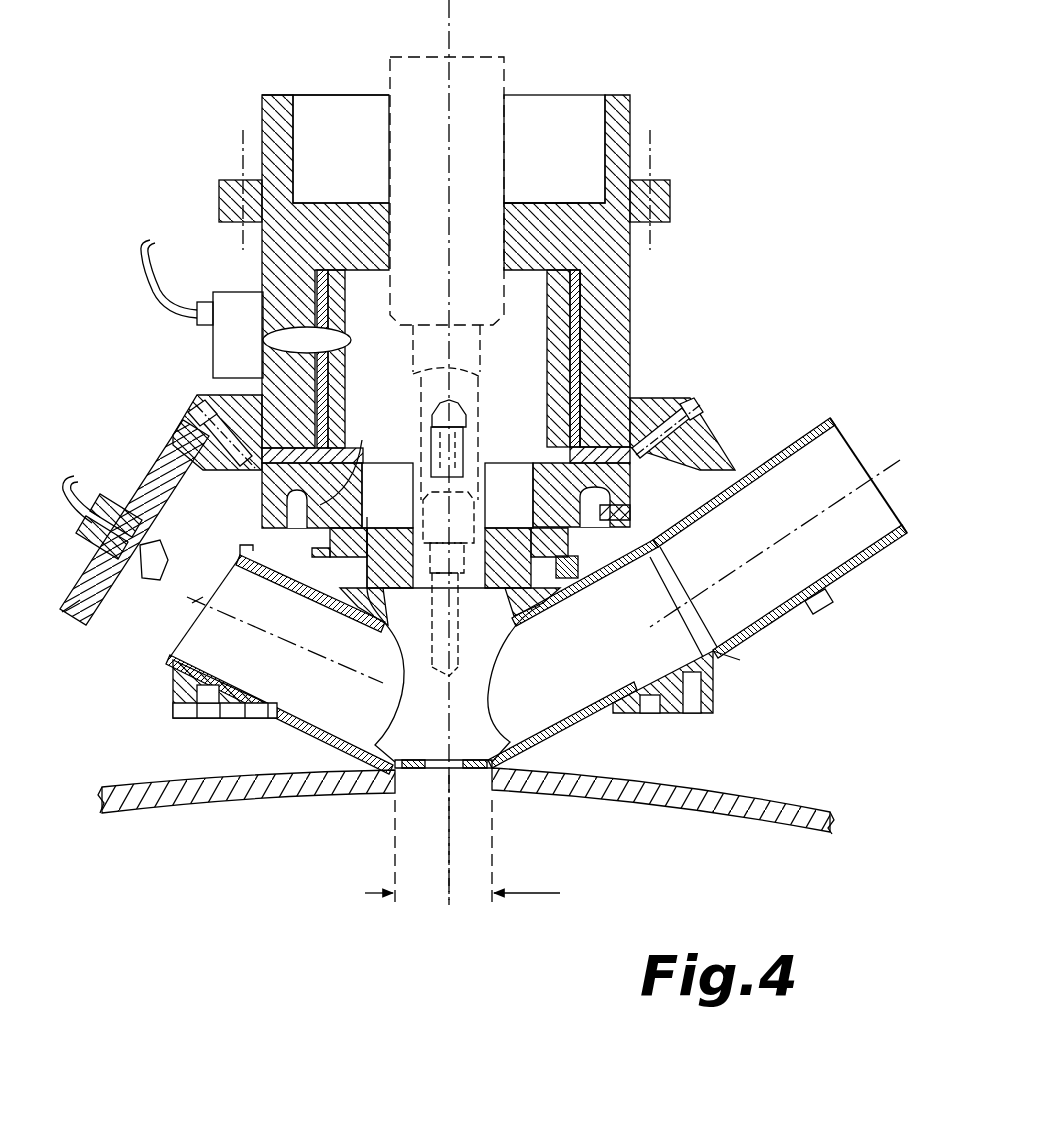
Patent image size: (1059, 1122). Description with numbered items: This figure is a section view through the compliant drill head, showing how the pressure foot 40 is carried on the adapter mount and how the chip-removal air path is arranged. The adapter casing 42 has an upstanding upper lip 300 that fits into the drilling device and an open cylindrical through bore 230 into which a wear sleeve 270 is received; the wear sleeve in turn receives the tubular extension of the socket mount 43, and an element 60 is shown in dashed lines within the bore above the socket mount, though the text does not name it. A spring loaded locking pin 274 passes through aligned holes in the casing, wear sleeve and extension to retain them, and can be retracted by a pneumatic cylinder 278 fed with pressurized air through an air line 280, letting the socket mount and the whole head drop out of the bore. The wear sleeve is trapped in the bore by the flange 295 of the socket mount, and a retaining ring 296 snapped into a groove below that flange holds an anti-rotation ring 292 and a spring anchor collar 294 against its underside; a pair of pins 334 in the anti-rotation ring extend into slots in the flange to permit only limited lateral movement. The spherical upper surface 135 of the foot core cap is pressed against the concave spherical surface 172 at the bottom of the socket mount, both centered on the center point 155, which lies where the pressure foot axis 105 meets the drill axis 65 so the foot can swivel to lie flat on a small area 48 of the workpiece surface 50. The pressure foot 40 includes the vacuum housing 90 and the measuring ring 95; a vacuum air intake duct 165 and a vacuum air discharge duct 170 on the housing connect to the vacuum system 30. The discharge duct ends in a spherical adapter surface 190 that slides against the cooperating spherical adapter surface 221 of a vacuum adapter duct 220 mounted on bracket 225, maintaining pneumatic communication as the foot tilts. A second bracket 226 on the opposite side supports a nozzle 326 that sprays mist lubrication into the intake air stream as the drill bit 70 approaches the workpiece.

The vacuum system 30 is at (875, 432).
The pressure foot 40 is at (128, 705).
The adapter casing 42 is at (640, 308).
The socket mount 43 is at (540, 253).
The small area 48 is at (385, 893).
The workpiece surface 50 is at (785, 793).
The actuator rod 60 is at (410, 76).
The drill axis 65 is at (462, 54).
The drill bit 70 is at (462, 650).
The vacuum housing 90 is at (238, 735).
The measuring ring 95 is at (718, 706).
The pressure foot axis 105 is at (438, 800).
The spherical upper surface 135 is at (446, 514).
The center point 155 is at (430, 764).
The vacuum air intake duct 165 is at (322, 726).
The vacuum air discharge duct 170 is at (595, 735).
The concave spherical surface 172 is at (398, 603).
The spherical adapter surface 190 is at (740, 656).
The vacuum adapter duct 220 is at (875, 566).
The spherical adapter surface 221 is at (650, 575).
The bracket 225 is at (718, 450).
The bracket 226 is at (352, 342).
The through bore 230 is at (580, 240).
The wear sleeve 270 is at (336, 272).
The locking pin 274 is at (322, 335).
The pneumatic cylinder 278 is at (213, 348).
The air line 280 is at (147, 263).
The anti-rotation ring 292 is at (633, 510).
The spring anchor collar 294 is at (640, 555).
The flange 295 is at (262, 495).
The retaining ring 296 is at (577, 567).
The upper lip 300 is at (262, 97).
The nozzle 326 is at (140, 583).
The pins 334 is at (315, 495).